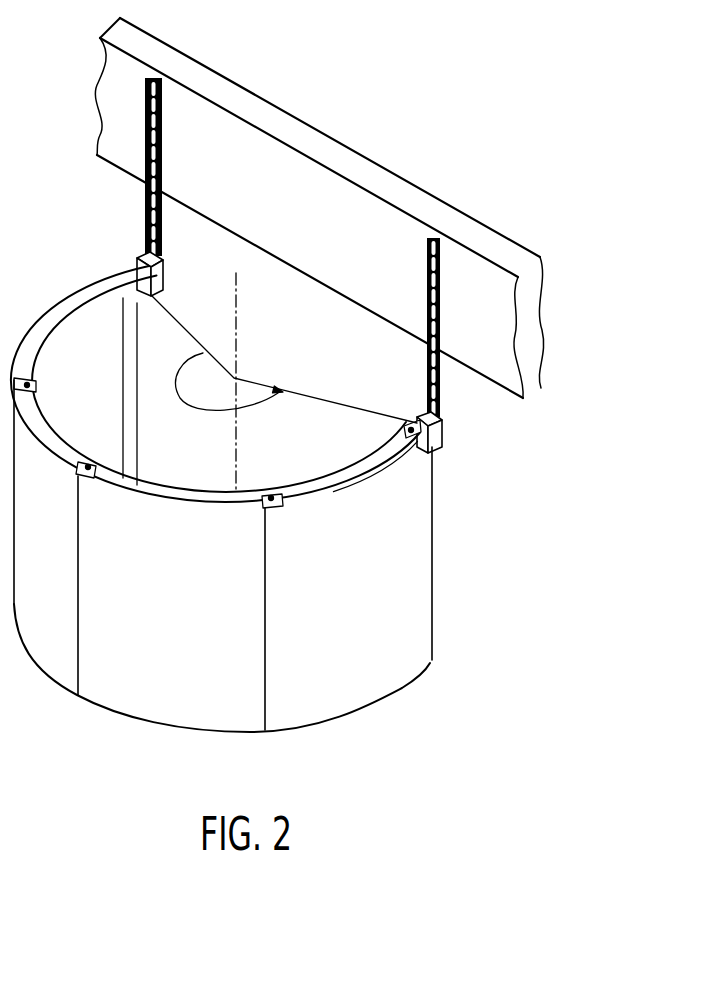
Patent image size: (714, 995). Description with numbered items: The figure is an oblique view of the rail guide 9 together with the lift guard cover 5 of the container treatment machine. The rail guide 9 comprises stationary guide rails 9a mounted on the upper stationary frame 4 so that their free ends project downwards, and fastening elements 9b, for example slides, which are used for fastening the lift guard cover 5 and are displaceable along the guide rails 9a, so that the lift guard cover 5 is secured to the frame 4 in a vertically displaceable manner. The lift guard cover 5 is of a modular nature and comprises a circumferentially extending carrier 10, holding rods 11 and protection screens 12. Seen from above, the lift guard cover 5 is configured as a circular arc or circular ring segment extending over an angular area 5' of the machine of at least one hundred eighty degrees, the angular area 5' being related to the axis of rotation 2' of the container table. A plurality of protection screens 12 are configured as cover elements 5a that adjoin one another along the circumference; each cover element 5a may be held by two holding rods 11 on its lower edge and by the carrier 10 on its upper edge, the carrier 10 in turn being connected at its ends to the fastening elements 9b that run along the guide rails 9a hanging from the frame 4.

The stationary frame 4 is at (500, 333).
The rail guide 9 is at (273, 281).
The guide rails 9a is at (145, 115).
The fastening elements 9b is at (444, 450).
The carrier 10 is at (58, 344).
The holding rods 11 is at (123, 368).
The axis of rotation 2' is at (263, 381).
The angular area 5' is at (224, 400).
The lift guard cover 5 is at (252, 521).
The cover elements 5a is at (34, 668).
The protection screens 12 is at (193, 695).